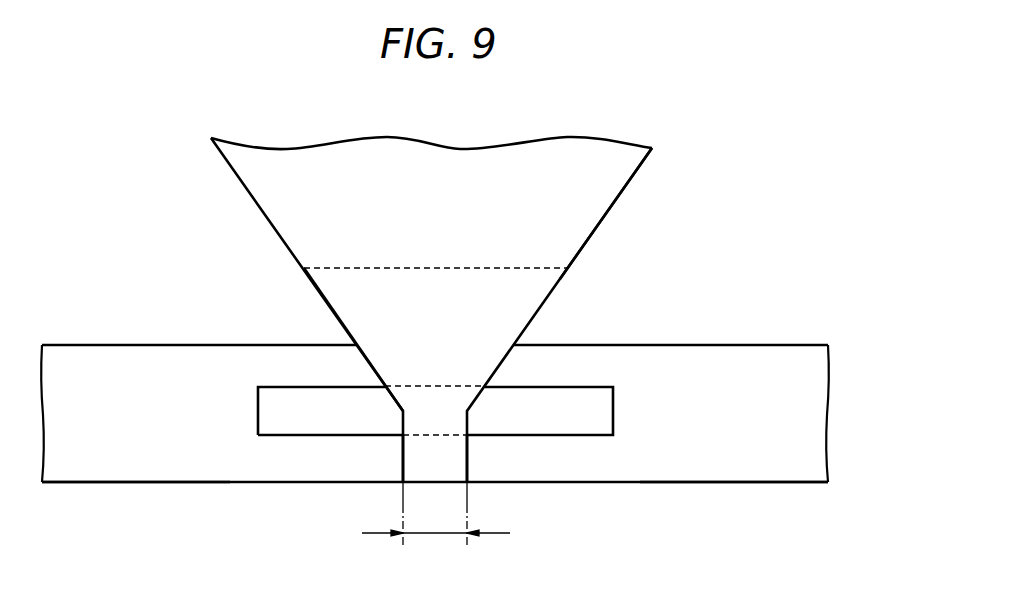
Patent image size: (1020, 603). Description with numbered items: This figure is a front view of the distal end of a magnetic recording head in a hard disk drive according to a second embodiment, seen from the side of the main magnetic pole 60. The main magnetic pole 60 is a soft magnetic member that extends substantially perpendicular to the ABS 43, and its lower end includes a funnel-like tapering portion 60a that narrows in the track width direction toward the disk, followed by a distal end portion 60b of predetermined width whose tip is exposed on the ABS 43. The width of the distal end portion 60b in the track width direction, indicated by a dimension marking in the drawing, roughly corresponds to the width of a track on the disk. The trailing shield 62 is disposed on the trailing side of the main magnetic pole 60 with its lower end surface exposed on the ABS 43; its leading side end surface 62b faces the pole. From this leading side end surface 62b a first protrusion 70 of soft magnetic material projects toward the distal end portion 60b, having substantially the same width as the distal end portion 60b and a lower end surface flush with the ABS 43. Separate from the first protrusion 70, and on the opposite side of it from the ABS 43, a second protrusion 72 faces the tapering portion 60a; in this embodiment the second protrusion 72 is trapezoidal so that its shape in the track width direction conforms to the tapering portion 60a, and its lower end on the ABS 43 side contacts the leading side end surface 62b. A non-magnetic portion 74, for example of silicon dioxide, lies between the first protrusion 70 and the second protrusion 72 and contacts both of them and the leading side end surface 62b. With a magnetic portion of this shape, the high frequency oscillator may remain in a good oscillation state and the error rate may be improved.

The main magnetic pole 60 is at (593, 169).
The tapering portion 60a is at (597, 207).
The distal end portion 60b is at (436, 465).
The trailing shield 62 is at (760, 376).
The leading side end surface 62b is at (738, 465).
The ABS 43 is at (100, 485).
The first protrusion 70 is at (402, 461).
The second protrusion 72 is at (360, 303).
The non-magnetic portion 74 is at (274, 420).